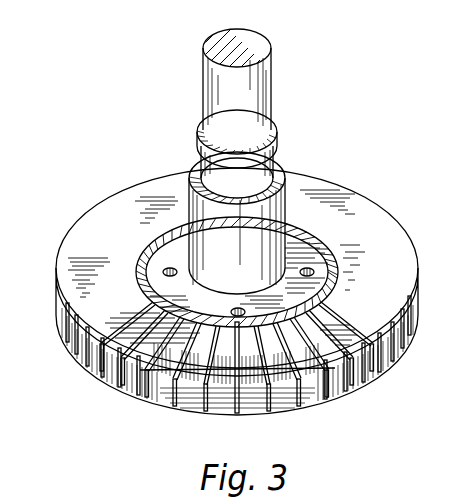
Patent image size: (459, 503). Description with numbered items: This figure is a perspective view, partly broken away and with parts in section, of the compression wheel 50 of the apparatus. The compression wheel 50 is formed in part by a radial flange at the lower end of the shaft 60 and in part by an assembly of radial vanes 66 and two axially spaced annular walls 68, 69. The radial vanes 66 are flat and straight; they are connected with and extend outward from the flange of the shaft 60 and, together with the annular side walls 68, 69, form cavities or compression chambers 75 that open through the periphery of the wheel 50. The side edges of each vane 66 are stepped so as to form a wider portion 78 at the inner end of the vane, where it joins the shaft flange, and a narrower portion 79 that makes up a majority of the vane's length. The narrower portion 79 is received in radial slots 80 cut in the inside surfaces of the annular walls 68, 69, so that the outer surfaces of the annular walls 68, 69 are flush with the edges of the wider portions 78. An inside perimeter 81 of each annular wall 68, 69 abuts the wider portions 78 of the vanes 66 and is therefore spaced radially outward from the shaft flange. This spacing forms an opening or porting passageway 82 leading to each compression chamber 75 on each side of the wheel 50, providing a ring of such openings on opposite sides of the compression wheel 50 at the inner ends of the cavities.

The compression wheel 50 is at (114, 188).
The shaft 60 is at (270, 85).
The annular wall 68 is at (70, 241).
The inside perimeter 81 is at (153, 245).
The porting passageway 82 is at (146, 300).
The wider portion 78 is at (193, 332).
The narrower portion 79 is at (188, 398).
The radial slots 80 is at (213, 412).
The annular wall 69 is at (85, 368).
The compression chambers 75 is at (363, 378).
The radial vanes 66 is at (148, 392).